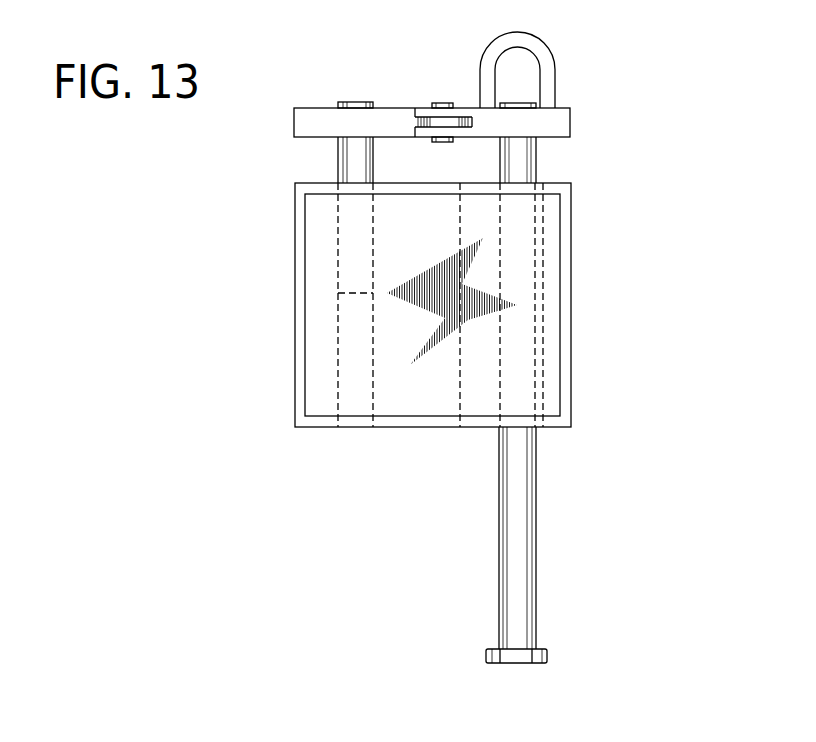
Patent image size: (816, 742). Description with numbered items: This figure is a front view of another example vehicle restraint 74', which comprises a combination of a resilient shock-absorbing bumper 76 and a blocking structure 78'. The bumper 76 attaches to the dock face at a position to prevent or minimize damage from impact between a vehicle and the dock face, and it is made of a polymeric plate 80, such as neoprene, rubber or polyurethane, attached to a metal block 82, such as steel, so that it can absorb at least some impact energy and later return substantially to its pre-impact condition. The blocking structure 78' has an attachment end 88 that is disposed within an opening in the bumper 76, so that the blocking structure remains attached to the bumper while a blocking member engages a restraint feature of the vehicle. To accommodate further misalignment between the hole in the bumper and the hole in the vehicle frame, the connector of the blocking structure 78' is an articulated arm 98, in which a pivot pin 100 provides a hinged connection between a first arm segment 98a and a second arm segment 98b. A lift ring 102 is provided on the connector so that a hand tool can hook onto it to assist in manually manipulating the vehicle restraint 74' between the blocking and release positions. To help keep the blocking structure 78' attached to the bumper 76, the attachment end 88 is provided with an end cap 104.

The vehicle restraint 74' is at (487, 346).
The resilient shock-absorbing bumper 76 is at (295, 229).
The blocking structure 78' is at (436, 151).
The polymeric plate 80 is at (305, 315).
The metal block 82 is at (295, 274).
The attachment end 88 is at (537, 159).
The articulated arm 98 is at (306, 108).
The arm segment 98a is at (385, 108).
The arm segment 98b is at (563, 108).
The pivot pin 100 is at (442, 103).
The lift ring 102 is at (556, 58).
The end cap 104 is at (486, 656).